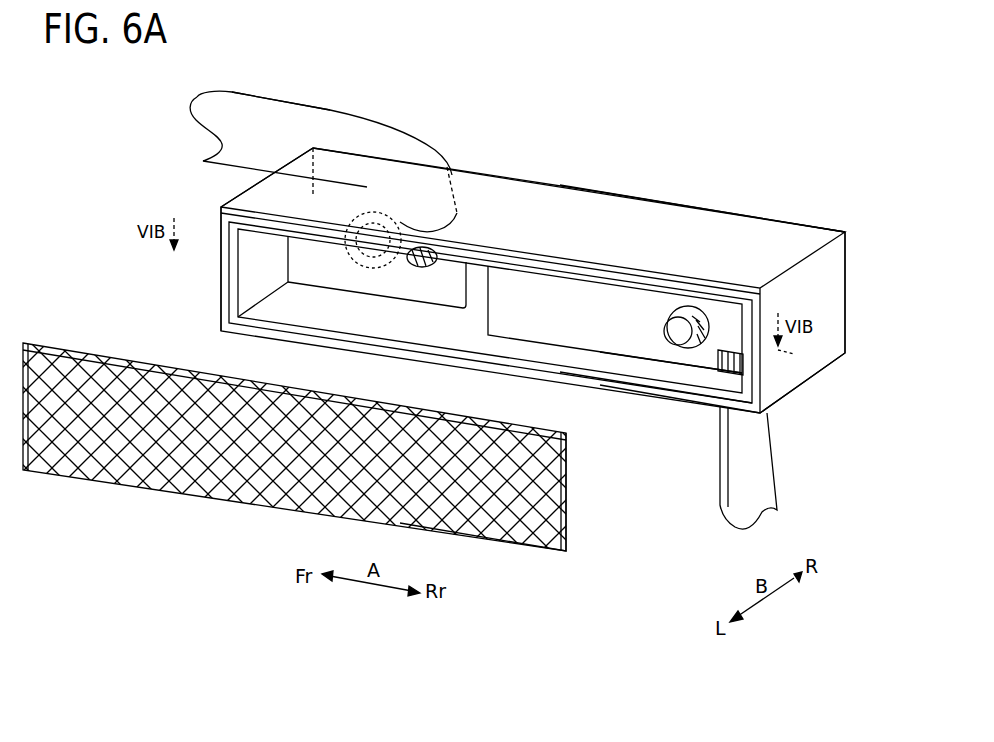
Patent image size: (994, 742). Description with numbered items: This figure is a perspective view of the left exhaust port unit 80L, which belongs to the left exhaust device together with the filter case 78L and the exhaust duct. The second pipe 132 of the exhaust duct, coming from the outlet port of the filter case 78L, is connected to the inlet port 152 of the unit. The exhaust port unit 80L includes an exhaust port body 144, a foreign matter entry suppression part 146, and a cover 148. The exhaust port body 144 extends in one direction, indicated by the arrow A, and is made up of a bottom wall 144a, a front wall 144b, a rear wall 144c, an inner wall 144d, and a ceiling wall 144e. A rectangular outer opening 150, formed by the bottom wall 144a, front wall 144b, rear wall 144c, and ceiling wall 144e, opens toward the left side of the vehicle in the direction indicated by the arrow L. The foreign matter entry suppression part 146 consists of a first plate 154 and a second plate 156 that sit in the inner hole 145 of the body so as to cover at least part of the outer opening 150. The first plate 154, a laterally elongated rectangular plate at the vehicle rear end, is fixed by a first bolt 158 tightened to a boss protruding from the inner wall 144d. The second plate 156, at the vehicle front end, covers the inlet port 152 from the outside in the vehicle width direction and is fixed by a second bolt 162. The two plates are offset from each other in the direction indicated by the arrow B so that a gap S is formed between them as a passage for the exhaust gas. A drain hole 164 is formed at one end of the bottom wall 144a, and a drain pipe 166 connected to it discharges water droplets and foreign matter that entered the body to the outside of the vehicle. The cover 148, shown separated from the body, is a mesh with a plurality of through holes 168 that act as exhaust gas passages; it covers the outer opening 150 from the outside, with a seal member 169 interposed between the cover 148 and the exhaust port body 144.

The exhaust port body 144 is at (756, 220).
The bottom wall 144a is at (698, 377).
The front wall 144b is at (258, 268).
The rear wall 144c is at (808, 360).
The inner wall 144d is at (623, 213).
The ceiling wall 144e is at (573, 205).
The inner hole 145 is at (470, 340).
The foreign matter entry suppression part 146 is at (620, 368).
The cover 148 is at (515, 548).
The outer opening 150 is at (265, 318).
The inlet port 152 is at (422, 226).
The first plate 154 is at (652, 350).
The second plate 156 is at (331, 275).
The first bolt 158 is at (668, 331).
The second bolt 162 is at (421, 268).
The drain hole 164 is at (727, 350).
The drain pipe 166 is at (757, 458).
The through holes 168 is at (157, 483).
The seal member 169 is at (221, 288).
The second pipe 132 is at (240, 98).
The filter case 78L is at (297, 95).
The exhaust port unit 80L is at (679, 176).
The gap S is at (476, 290).